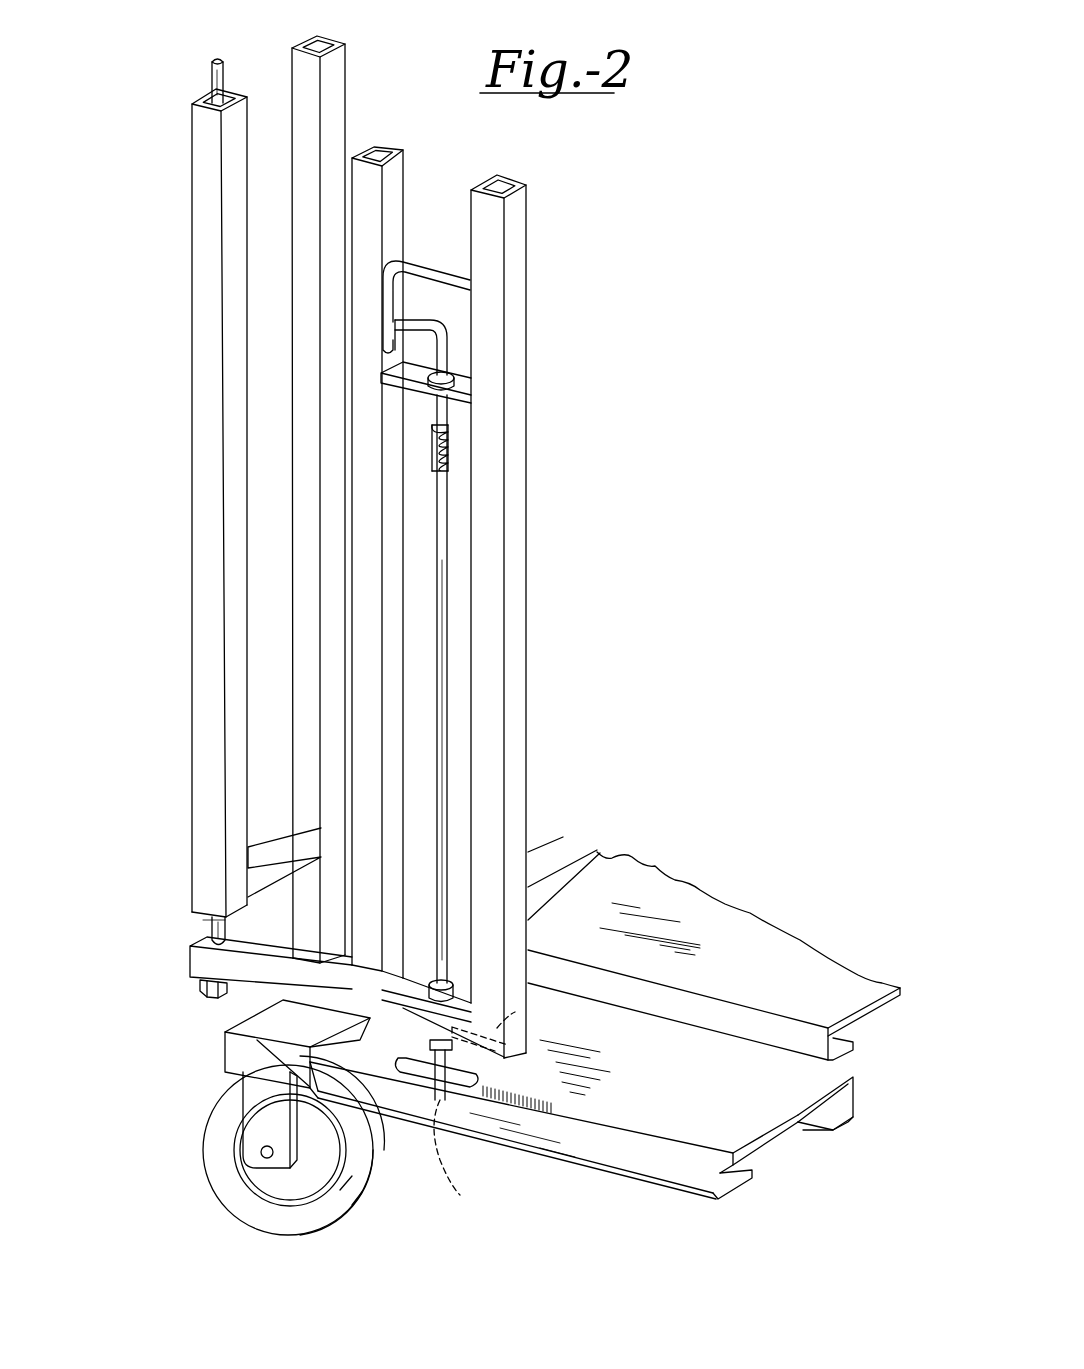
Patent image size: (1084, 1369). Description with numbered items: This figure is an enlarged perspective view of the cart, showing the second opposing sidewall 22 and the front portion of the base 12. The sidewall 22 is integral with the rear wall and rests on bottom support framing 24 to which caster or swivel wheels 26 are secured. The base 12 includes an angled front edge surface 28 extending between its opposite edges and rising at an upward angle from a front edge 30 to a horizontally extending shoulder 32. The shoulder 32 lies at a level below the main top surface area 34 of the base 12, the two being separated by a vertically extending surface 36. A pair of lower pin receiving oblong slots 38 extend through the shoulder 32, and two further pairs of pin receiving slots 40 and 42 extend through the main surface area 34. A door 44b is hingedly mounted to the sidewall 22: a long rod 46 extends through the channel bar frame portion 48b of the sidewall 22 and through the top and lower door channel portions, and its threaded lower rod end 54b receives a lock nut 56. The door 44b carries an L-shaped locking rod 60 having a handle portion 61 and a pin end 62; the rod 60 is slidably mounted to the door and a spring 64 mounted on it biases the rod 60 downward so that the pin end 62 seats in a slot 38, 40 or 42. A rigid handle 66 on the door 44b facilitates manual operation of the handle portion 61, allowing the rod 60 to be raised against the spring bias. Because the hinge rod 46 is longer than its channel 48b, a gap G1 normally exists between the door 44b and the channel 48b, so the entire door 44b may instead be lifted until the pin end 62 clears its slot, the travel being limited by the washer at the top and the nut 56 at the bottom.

The base 12 is at (870, 1013).
The second opposing sidewall 22 is at (216, 499).
The bottom support framing 24 is at (225, 1048).
The caster or swivel wheels 26 is at (205, 1160).
The angled front edge surface 28 is at (663, 1168).
The front edge 30 is at (600, 1172).
The shoulder 32 is at (632, 1138).
The main top surface area 34 is at (750, 1120).
The vertically extending surface 36 is at (592, 1115).
The lower pin receiving slots 38 is at (413, 1088).
The pin receiving slots 40 is at (398, 1100).
The pin receiving slots 42 is at (507, 1018).
The door 44b is at (528, 682).
The long rod 46 is at (210, 82).
The channel bar frame portion 48b is at (192, 224).
The lower rod end 54b is at (208, 930).
The lock nuts 56 is at (203, 997).
The L-shaped locking rod 60 is at (448, 628).
The handle portion 61 is at (440, 322).
The pin end 62 is at (455, 1158).
The spring 64 is at (455, 470).
The rigid handle 66 is at (423, 270).
The gap G1 is at (205, 920).